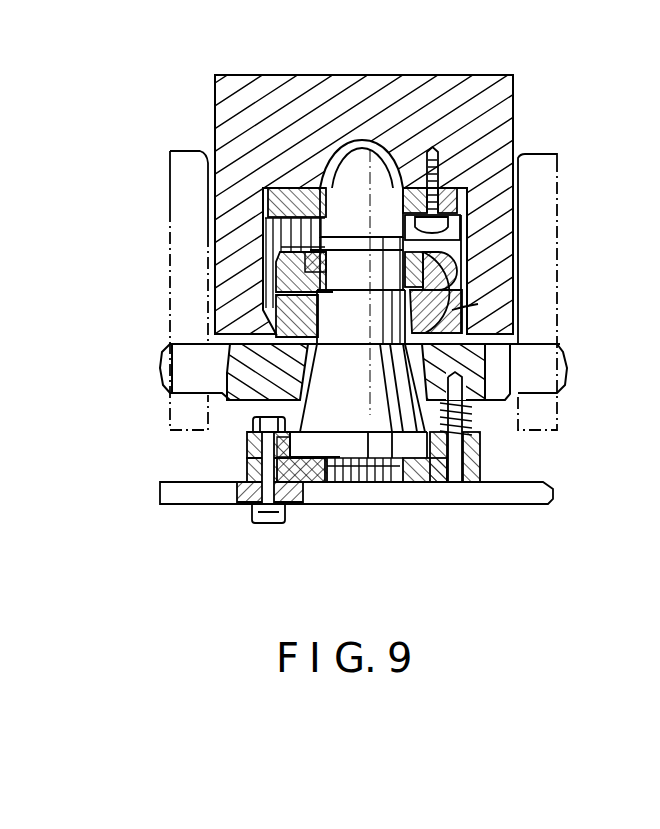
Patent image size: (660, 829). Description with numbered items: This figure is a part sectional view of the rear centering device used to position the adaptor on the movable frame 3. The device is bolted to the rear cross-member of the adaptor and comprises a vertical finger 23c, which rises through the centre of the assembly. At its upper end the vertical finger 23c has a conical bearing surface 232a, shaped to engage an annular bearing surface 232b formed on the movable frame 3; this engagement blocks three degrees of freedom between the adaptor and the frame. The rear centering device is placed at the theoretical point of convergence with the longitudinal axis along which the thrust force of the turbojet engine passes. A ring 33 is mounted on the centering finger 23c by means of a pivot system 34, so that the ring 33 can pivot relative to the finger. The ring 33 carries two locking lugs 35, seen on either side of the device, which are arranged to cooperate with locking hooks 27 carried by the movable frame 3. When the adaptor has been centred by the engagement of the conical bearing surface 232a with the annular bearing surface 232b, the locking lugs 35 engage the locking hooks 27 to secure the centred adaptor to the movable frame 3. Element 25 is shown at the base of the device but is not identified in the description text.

The movable frame 3 is at (323, 75).
The conical bearing surface 232a is at (293, 188).
The annular bearing surface 232b is at (443, 176).
The vertical finger 23c is at (413, 242).
The locking hooks 27 is at (180, 313).
The pivot system 34 is at (452, 310).
The locking lugs 35 is at (183, 378).
The ring 33 is at (468, 402).
The base plate 25 is at (337, 495).